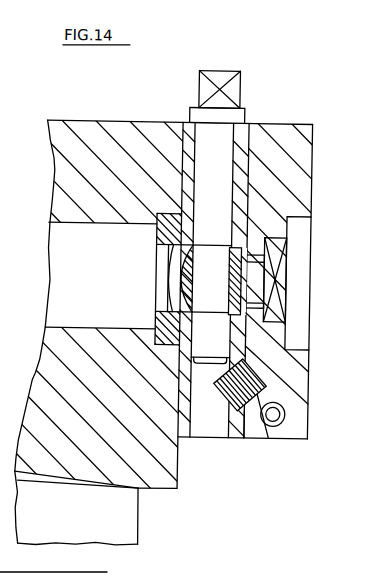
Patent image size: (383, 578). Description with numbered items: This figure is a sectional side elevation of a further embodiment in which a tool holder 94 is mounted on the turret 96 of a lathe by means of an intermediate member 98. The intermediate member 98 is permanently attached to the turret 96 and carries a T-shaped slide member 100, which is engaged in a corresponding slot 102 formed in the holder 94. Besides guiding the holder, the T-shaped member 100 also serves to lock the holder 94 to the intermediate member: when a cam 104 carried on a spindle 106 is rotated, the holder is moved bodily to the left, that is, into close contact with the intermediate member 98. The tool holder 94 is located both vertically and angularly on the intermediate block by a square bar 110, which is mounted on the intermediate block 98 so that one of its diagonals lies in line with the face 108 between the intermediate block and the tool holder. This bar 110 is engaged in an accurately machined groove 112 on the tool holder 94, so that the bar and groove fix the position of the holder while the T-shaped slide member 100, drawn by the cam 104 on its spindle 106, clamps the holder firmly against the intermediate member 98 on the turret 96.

The tool holder 94 is at (286, 176).
The turret 96 is at (120, 464).
The intermediate member 98 is at (240, 157).
The T-shaped slide member 100 is at (275, 256).
The slot 102 is at (251, 326).
The cam 104 is at (213, 300).
The spindle 106 is at (211, 170).
The face 108 is at (245, 437).
The square bar 110 is at (249, 389).
The groove 112 is at (285, 424).